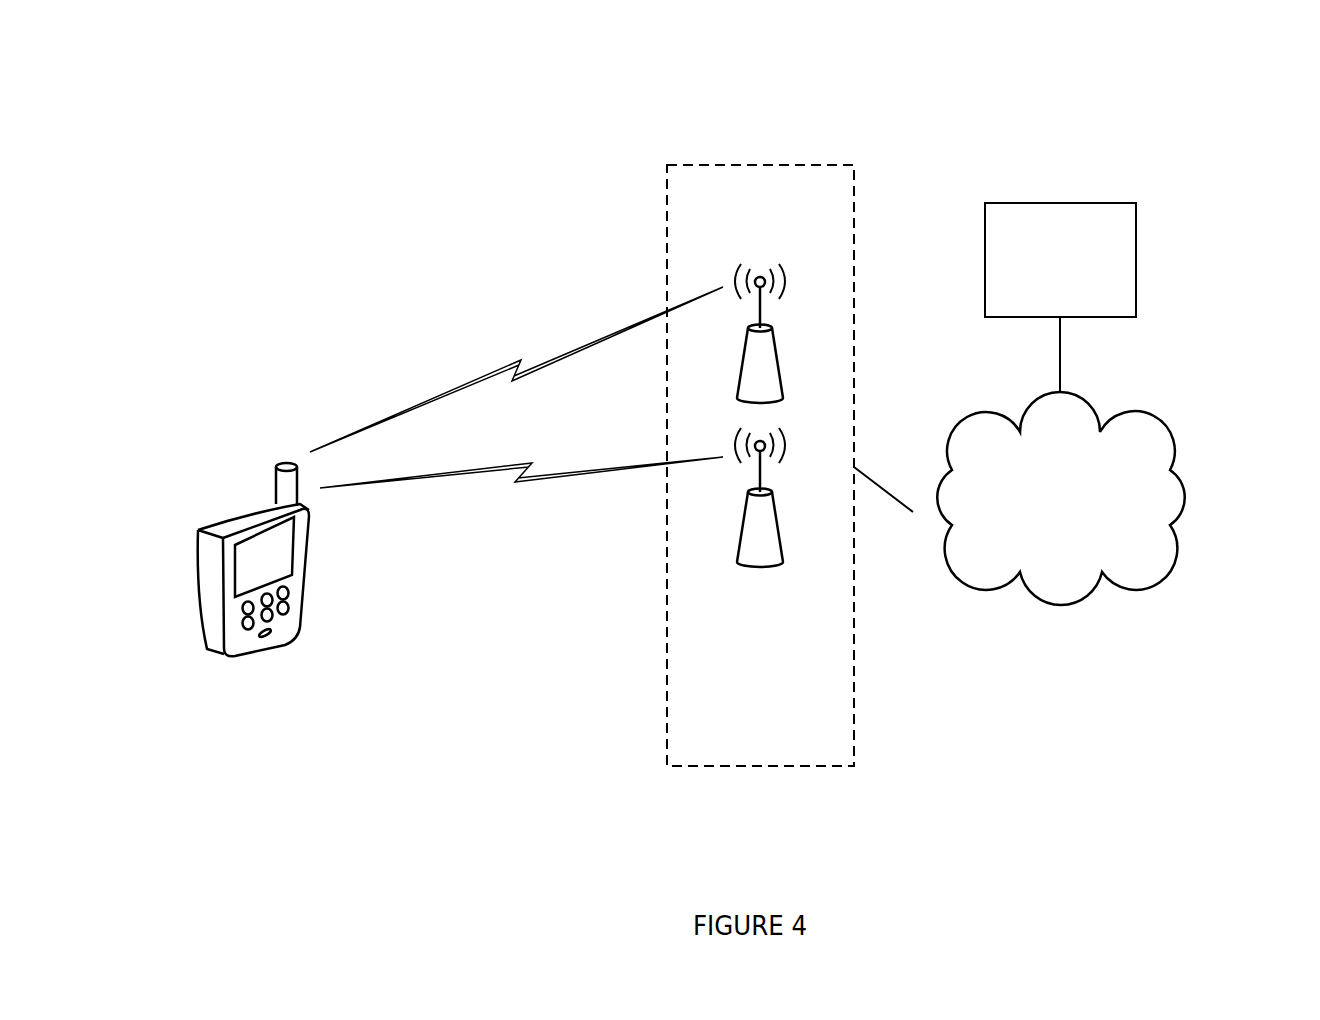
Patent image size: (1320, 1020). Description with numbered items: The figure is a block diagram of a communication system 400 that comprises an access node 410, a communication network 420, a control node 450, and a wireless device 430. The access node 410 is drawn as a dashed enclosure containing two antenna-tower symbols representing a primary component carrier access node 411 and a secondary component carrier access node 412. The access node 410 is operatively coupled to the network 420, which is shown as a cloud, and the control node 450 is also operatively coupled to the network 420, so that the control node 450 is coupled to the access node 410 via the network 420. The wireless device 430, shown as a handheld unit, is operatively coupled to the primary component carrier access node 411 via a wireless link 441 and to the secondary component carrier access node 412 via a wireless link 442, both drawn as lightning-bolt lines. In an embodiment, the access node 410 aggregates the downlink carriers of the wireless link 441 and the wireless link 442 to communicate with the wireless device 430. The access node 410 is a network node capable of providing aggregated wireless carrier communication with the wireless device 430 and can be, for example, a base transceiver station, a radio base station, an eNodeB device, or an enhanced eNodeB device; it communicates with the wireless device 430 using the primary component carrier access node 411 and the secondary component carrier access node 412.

The communication system 400 is at (1191, 81).
The access node 410 is at (780, 755).
The primary component carrier access node 411 is at (770, 572).
The secondary component carrier access node 412 is at (760, 403).
The communication network 420 is at (1082, 518).
The wireless device 430 is at (230, 657).
The wireless link 441 is at (546, 477).
The wireless link 442 is at (521, 361).
The control node 450 is at (1081, 301).